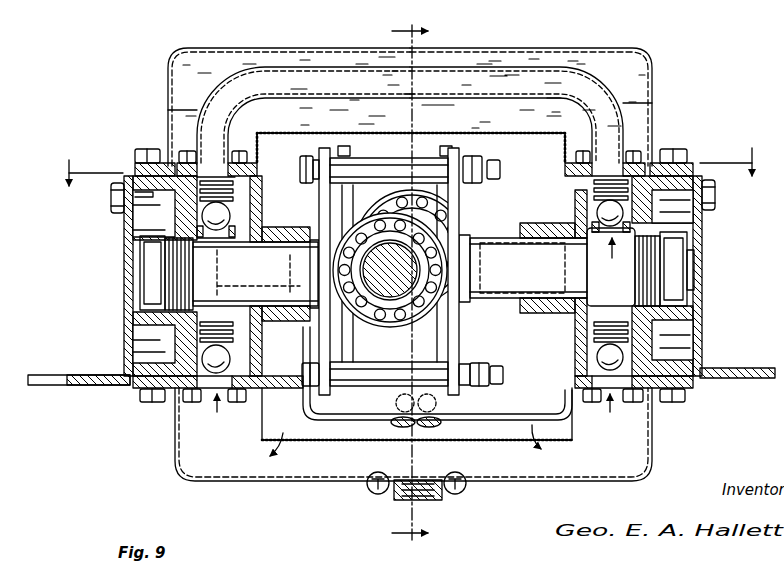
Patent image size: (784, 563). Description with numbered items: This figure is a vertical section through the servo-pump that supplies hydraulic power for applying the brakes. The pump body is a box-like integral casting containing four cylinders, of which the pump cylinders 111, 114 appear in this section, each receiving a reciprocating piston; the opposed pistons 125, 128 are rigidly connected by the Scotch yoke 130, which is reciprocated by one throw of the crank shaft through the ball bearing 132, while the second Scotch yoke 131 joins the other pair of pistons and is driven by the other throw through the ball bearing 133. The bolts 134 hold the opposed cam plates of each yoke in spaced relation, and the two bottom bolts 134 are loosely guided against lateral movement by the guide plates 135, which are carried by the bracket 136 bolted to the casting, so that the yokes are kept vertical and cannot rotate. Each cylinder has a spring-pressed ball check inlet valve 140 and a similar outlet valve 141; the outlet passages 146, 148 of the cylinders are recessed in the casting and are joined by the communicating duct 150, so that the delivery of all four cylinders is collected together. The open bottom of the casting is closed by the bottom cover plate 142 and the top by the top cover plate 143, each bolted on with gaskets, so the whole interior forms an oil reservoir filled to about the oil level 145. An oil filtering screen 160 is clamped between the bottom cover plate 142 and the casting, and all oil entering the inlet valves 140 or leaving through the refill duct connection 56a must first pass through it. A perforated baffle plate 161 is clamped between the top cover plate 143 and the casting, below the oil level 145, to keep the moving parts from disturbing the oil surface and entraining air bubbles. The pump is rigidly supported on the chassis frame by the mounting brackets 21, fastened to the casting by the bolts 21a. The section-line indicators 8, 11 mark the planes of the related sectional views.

The top cover plate 143 is at (318, 48).
The communicating duct 150 is at (523, 77).
The oil level 145 is at (190, 108).
The perforated baffle plate 161 is at (450, 128).
The bolts 134 is at (394, 167).
The outlet passages 148 is at (236, 184).
The outlet passages 146 is at (592, 200).
The outlet valve 141 is at (205, 215).
The inlet valve 140 is at (205, 356).
The bolts 21a is at (117, 206).
The piston 125 is at (198, 288).
The piston 128 is at (587, 271).
The pump cylinder 111 is at (266, 236).
The pump cylinder 114 is at (540, 240).
The Scotch yoke 130 is at (462, 341).
The Scotch yoke 131 is at (490, 330).
The ball bearing 132 is at (397, 315).
The ball bearing 133 is at (447, 308).
The bracket 136 is at (522, 382).
The guide plates 135 is at (430, 393).
The oil filtering screen 160 is at (363, 444).
The bottom cover plate 142 is at (262, 488).
The refill duct connection 56a is at (412, 497).
The mounting brackets 21 is at (81, 387).
The section line 8 is at (409, 182).
The section line 11 is at (421, 283).